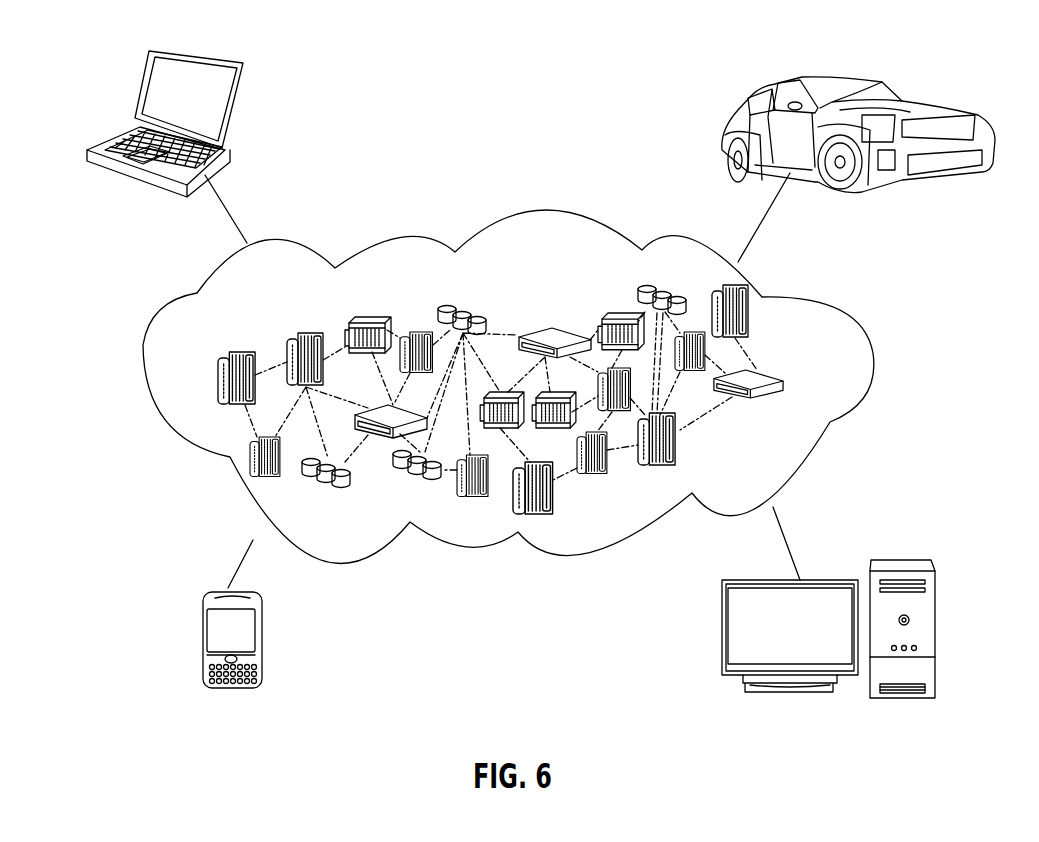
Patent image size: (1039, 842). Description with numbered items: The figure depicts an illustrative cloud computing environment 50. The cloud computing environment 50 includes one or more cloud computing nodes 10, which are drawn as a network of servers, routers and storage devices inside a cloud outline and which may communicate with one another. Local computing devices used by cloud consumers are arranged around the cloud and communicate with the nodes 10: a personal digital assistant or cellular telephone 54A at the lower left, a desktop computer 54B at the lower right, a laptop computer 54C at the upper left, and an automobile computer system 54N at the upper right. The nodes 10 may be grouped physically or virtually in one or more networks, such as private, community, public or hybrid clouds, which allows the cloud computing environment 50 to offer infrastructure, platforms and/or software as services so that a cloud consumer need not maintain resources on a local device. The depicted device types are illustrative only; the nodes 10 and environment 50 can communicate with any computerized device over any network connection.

The cloud computing nodes 10 is at (817, 380).
The cloud computing environment 50 is at (838, 306).
The cellular telephone 54A is at (200, 645).
The desktop computer 54B is at (906, 560).
The laptop computer 54C is at (238, 109).
The automobile computer system 54N is at (729, 117).